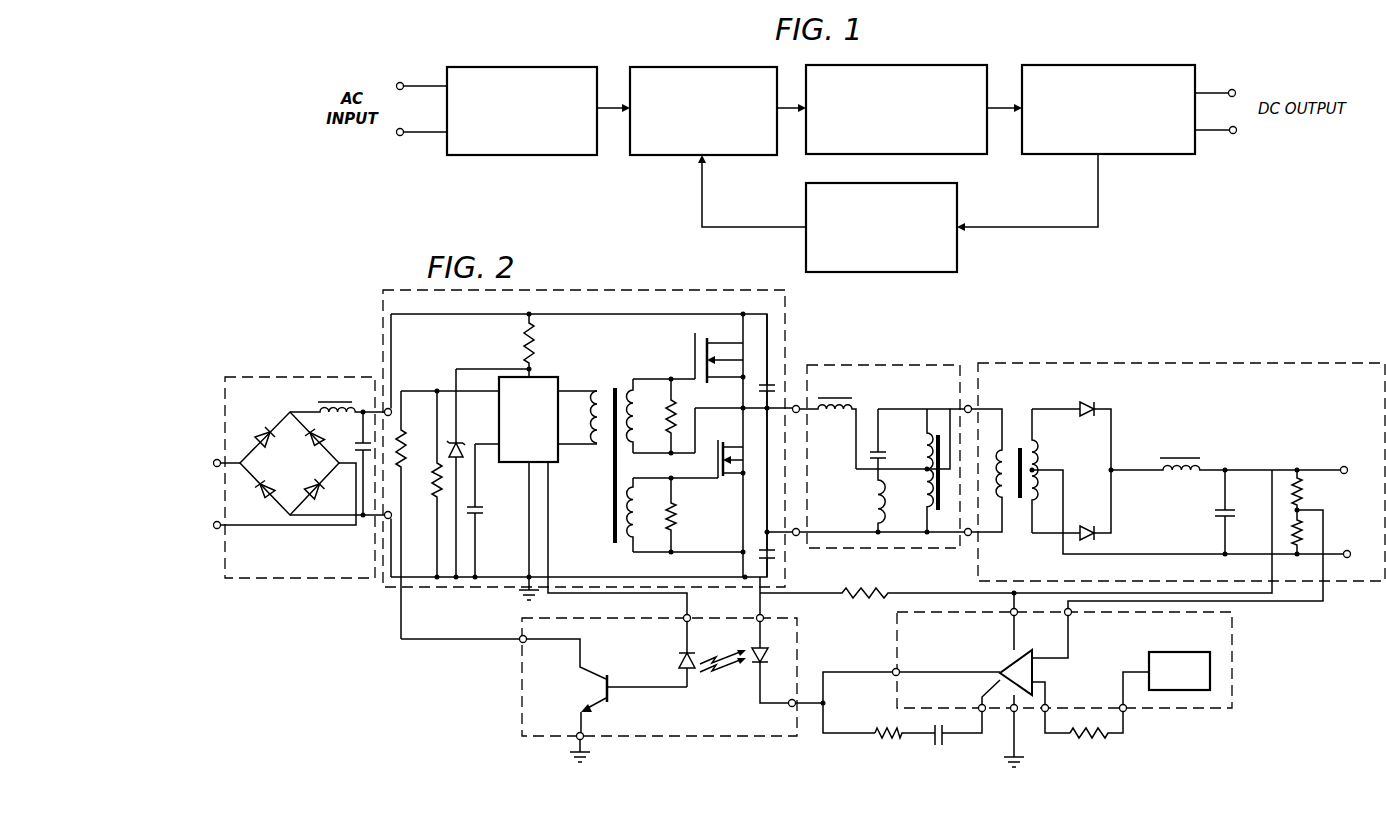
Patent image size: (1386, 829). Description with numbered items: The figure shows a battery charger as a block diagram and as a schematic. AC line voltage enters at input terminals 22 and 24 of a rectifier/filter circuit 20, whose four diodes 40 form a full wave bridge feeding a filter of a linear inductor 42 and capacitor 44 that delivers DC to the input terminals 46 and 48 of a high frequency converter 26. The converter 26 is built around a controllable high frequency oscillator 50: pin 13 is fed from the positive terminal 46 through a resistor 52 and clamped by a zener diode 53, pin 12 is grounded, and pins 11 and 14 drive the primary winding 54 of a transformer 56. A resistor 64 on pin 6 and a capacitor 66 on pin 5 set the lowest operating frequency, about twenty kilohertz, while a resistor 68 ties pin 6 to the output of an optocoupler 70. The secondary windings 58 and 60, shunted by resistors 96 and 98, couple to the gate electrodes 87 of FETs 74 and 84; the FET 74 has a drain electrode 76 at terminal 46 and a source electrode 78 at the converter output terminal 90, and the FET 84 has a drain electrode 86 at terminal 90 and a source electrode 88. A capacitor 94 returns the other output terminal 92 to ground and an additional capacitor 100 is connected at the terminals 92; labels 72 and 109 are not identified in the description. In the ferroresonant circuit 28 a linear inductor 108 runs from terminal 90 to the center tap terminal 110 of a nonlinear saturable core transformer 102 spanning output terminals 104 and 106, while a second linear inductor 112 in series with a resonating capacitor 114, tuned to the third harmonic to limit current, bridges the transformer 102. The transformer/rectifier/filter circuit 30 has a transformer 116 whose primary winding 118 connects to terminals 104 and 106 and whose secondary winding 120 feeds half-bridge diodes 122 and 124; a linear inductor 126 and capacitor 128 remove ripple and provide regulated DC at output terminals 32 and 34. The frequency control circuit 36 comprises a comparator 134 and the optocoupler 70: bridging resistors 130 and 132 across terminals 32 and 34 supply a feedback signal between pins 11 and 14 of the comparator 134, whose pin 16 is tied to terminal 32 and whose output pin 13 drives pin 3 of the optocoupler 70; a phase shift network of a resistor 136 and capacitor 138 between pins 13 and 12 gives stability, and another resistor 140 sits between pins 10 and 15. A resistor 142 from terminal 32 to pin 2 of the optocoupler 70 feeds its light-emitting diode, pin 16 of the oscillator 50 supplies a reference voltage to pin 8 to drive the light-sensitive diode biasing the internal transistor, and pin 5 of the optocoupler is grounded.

In FIG. 1, the rectifier/filter circuit 20 is at (500, 67).
In FIG. 2, the rectifier/filter circuit 20 is at (281, 377).
In FIG. 1, the input terminal 22 is at (402, 82).
In FIG. 2, the input terminal 22 is at (216, 459).
In FIG. 1, the input terminal 24 is at (401, 136).
In FIG. 2, the input terminal 24 is at (217, 529).
In FIG. 1, the high frequency converter 26 is at (676, 67).
In FIG. 2, the high frequency converter 26 is at (600, 290).
In FIG. 1, the ferroresonant circuit 28 is at (909, 65).
In FIG. 2, the ferroresonant circuit 28 is at (888, 365).
In FIG. 1, the transformer/rectifier/filter circuit 30 is at (1122, 65).
In FIG. 2, the transformer/rectifier/filter circuit 30 is at (1090, 363).
In FIG. 1, the output terminal 32 is at (1235, 89).
In FIG. 2, the output terminal 32 is at (1344, 466).
In FIG. 1, the output terminal 34 is at (1237, 132).
In FIG. 2, the output terminal 34 is at (1351, 553).
In FIG. 1, the frequency control circuit 36 is at (957, 202).
In FIG. 2, the diodes 40 is at (262, 444).
In FIG. 2, the linear inductor 42 is at (332, 400).
In FIG. 2, the capacitor 44 is at (355, 462).
In FIG. 2, the input terminal 46 is at (391, 408).
In FIG. 2, the input terminal 48 is at (385, 519).
In FIG. 2, the controllable high frequency oscillator 50 is at (556, 376).
In FIG. 2, the resistor 52 is at (535, 352).
In FIG. 2, the zener diode 53 is at (460, 440).
In FIG. 2, the primary winding 54 is at (601, 393).
In FIG. 2, the transformer 56 is at (590, 478).
In FIG. 2, the secondary winding 58 is at (637, 421).
In FIG. 2, the secondary winding 60 is at (637, 520).
In FIG. 2, the resistor 64 is at (433, 485).
In FIG. 2, the capacitor 66 is at (484, 510).
In FIG. 2, the resistor 68 is at (404, 442).
In FIG. 2, the optocoupler 70 is at (752, 737).
In FIG. 2, the gate lead 72 is at (695, 333).
In FIG. 2, the field effect transistor 74 is at (757, 332).
In FIG. 2, the drain electrode 76 is at (745, 314).
In FIG. 2, the source electrode 78 is at (743, 373).
In FIG. 2, the field effect transistor 84 is at (759, 457).
In FIG. 2, the drain electrode 86 is at (734, 446).
In FIG. 2, the gate electrodes 87 is at (718, 448).
In FIG. 2, the source electrode 88 is at (743, 484).
In FIG. 2, the output terminal 90 is at (805, 406).
In FIG. 2, the output terminal 92 is at (797, 537).
In FIG. 2, the capacitor 94 is at (778, 563).
In FIG. 2, the resistor 96 is at (676, 414).
In FIG. 2, the resistor 98 is at (677, 525).
In FIG. 2, the capacitor 100 is at (798, 404).
In FIG. 2, the nonlinear saturable core transformer 102 is at (940, 400).
In FIG. 2, the output terminal 104 is at (969, 405).
In FIG. 2, the output terminal 106 is at (968, 537).
In FIG. 2, the linear inductor 108 is at (858, 410).
In FIG. 2, the winding 109 is at (927, 501).
In FIG. 2, the terminal 110 is at (926, 468).
In FIG. 2, the linear inductor 112 is at (874, 502).
In FIG. 2, the resonating capacitor 114 is at (869, 456).
In FIG. 2, the transformer 116 is at (1017, 416).
In FIG. 2, the primary winding 118 is at (1007, 474).
In FIG. 2, the secondary winding 120 is at (1037, 461).
In FIG. 2, the diode 122 is at (1091, 404).
In FIG. 2, the diode 124 is at (1097, 536).
In FIG. 2, the linear inductor 126 is at (1179, 456).
In FIG. 2, the capacitor 128 is at (1214, 512).
In FIG. 2, the bridging resistor 130 is at (1302, 491).
In FIG. 2, the bridging resistor 132 is at (1303, 531).
In FIG. 2, the comparator 134 is at (1148, 710).
In FIG. 2, the resistor 136 is at (878, 728).
In FIG. 2, the capacitor 138 is at (937, 746).
In FIG. 2, the resistor 140 is at (1090, 736).
In FIG. 2, the resistor 142 is at (853, 590).
In FIG. 2, the optocoupler pin 2 is at (764, 621).
In FIG. 2, the optocoupler pin 3 is at (791, 700).
In FIG. 2, the oscillator terminal and optocoupler pin 5 is at (584, 736).
In FIG. 2, the oscillator terminal 6 is at (526, 641).
In FIG. 2, the optocoupler pin 8 is at (691, 622).
In FIG. 2, the comparator pin 10 is at (1048, 705).
In FIG. 2, the oscillator terminal and comparator pin 11 is at (1072, 614).
In FIG. 2, the oscillator terminal and comparator pin 12 is at (978, 704).
In FIG. 2, the oscillator terminal and comparator pin 13 is at (899, 669).
In FIG. 2, the oscillator terminal and comparator pin 14 is at (1005, 731).
In FIG. 2, the comparator pin 15 is at (1120, 705).
In FIG. 2, the oscillator terminal and comparator pin 16 is at (1018, 614).